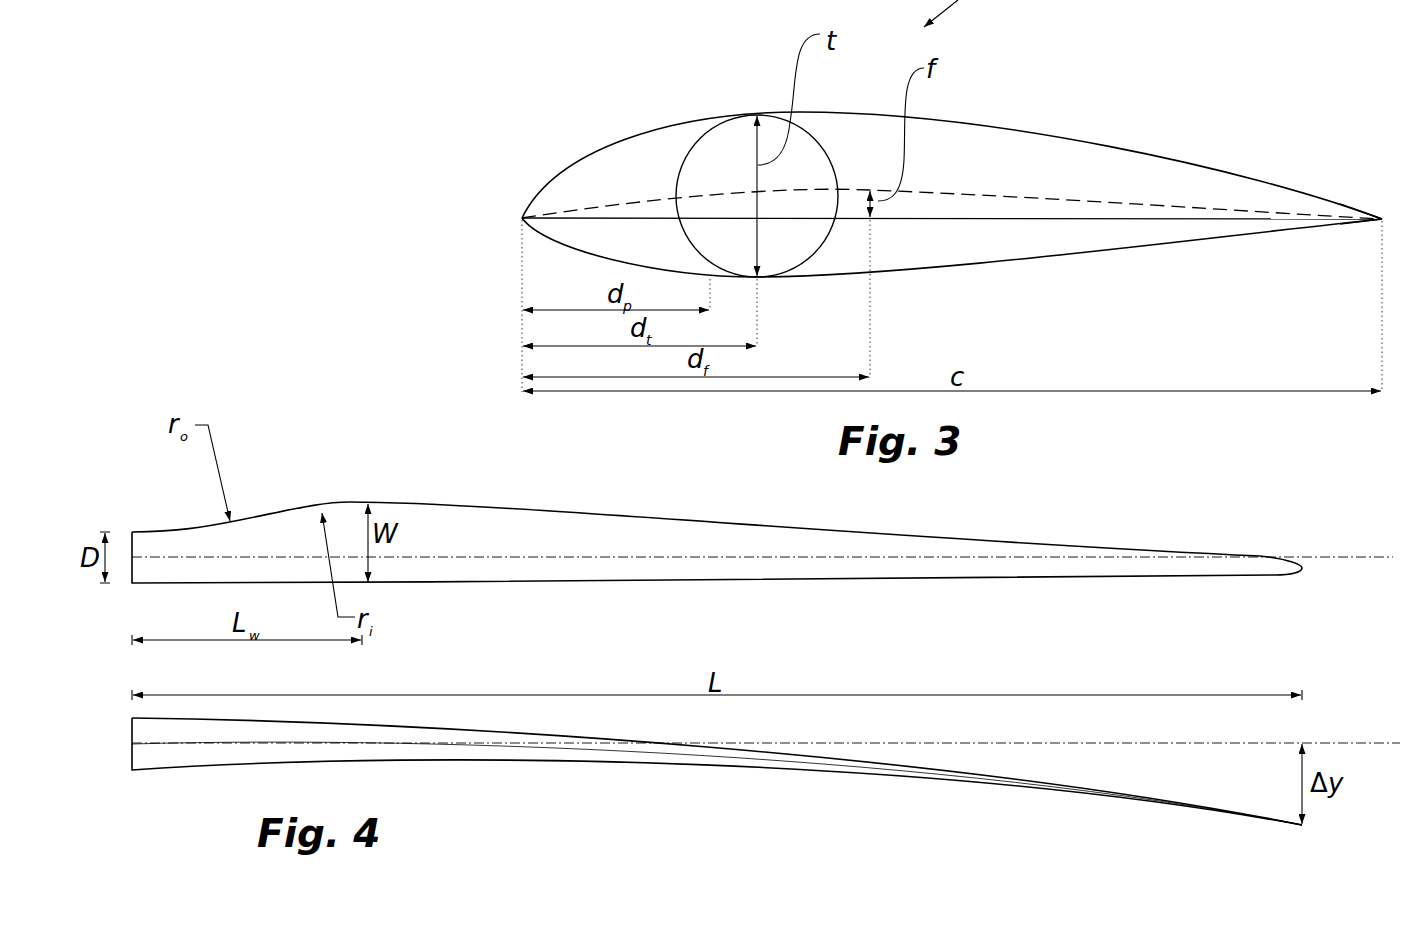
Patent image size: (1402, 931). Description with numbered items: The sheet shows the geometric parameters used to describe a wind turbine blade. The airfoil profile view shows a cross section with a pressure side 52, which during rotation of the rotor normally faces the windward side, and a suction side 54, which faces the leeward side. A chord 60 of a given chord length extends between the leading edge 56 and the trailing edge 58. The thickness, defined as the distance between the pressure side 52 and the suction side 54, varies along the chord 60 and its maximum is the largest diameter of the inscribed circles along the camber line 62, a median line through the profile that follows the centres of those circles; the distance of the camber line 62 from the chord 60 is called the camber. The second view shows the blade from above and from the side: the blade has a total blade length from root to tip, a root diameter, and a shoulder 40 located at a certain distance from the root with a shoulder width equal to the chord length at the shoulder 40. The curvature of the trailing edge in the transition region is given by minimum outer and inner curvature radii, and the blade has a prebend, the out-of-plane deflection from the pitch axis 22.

In FIG. 4, the pitch axis 22 is at (596, 556).
In FIG. 4, the shoulder 40 is at (369, 502).
In FIG. 3, the pressure side 52 is at (1115, 240).
In FIG. 3, the suction side 54 is at (1057, 129).
In FIG. 3, the leading edge 56 is at (522, 217).
In FIG. 3, the trailing edge 58 is at (1381, 218).
In FIG. 3, the chord 60 is at (1162, 217).
In FIG. 3, the camber line 62 is at (940, 189).